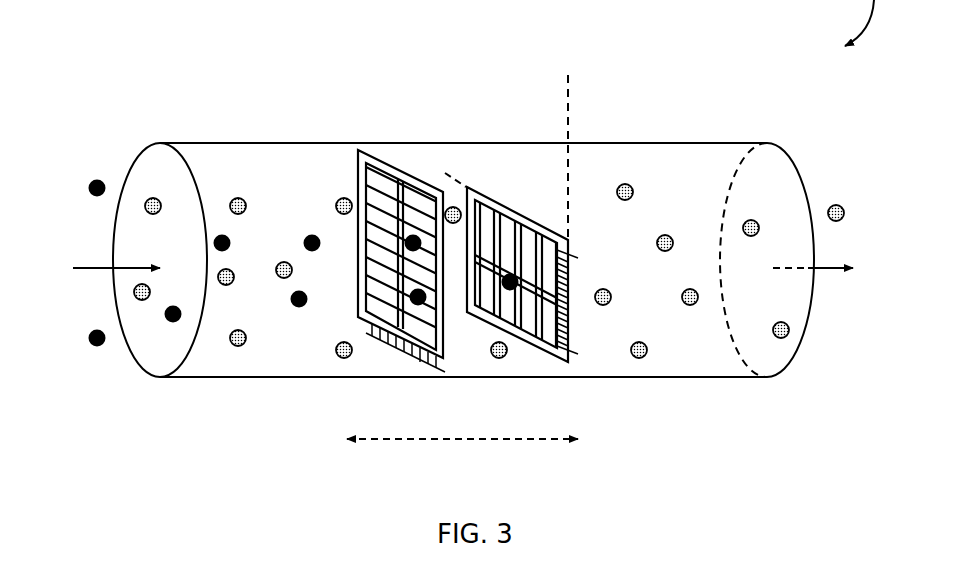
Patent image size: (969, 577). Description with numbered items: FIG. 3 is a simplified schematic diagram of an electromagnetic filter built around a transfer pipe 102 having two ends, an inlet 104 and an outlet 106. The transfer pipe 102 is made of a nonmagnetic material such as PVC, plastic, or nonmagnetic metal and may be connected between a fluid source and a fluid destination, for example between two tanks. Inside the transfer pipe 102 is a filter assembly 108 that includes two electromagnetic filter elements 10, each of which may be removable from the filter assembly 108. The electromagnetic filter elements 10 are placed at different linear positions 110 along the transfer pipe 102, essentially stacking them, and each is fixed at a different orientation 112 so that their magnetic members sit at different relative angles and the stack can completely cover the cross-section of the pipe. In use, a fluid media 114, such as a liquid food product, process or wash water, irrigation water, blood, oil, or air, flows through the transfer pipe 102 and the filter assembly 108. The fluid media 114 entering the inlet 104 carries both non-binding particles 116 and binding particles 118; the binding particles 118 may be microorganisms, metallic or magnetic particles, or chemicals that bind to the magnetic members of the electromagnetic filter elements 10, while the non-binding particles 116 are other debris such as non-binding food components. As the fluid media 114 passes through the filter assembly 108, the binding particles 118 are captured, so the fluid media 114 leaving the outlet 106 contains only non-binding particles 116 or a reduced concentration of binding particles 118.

The electromagnetic filter element 10 is at (462, 246).
The transfer pipe 102 is at (201, 153).
The inlet 104 is at (145, 378).
The outlet 106 is at (791, 365).
The filter assembly 108 is at (348, 160).
The linear positions 110 is at (462, 452).
The orientation 112 is at (568, 118).
The fluid media 114 is at (463, 284).
The non-binding particles 116 is at (238, 346).
The binding particles 118 is at (105, 163).